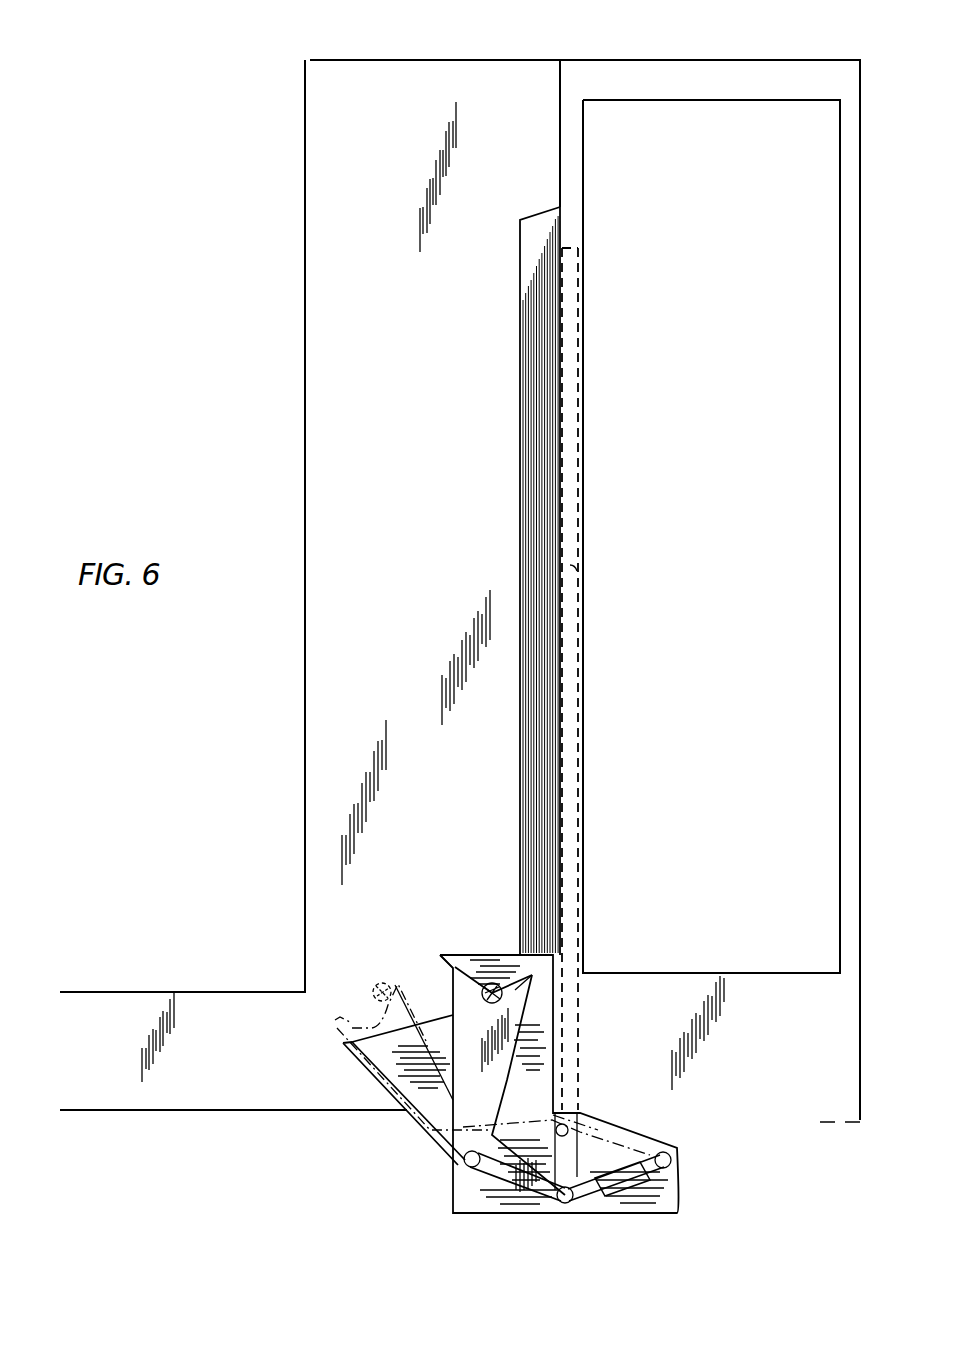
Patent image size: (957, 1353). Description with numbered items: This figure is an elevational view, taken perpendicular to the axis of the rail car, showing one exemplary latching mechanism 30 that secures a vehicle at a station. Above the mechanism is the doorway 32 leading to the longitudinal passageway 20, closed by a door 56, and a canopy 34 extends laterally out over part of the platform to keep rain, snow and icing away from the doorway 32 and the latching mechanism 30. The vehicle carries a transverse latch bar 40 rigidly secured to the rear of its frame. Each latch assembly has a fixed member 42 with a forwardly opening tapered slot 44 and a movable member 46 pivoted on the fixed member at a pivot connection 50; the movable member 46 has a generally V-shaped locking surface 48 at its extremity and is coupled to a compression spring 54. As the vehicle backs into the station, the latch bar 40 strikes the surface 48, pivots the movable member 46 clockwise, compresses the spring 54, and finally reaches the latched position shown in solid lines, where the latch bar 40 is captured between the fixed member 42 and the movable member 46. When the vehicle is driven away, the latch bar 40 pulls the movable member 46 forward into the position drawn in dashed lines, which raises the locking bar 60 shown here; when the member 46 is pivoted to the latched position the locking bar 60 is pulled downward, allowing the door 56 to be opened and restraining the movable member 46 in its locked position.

The longitudinal passageway 20 is at (753, 60).
The latching mechanism 30 is at (417, 1132).
The doorway 32 is at (527, 448).
The canopy 34 is at (420, 330).
The latch bar 40 is at (490, 983).
The fixed member 42 is at (470, 962).
The tapered slot 44 is at (440, 970).
The movable member 46 is at (515, 1027).
The locking surface 48 is at (527, 987).
The pivot connection 50 is at (466, 1164).
The spring 54 is at (623, 1183).
The door 56 is at (568, 363).
The locking bar 60 is at (568, 632).